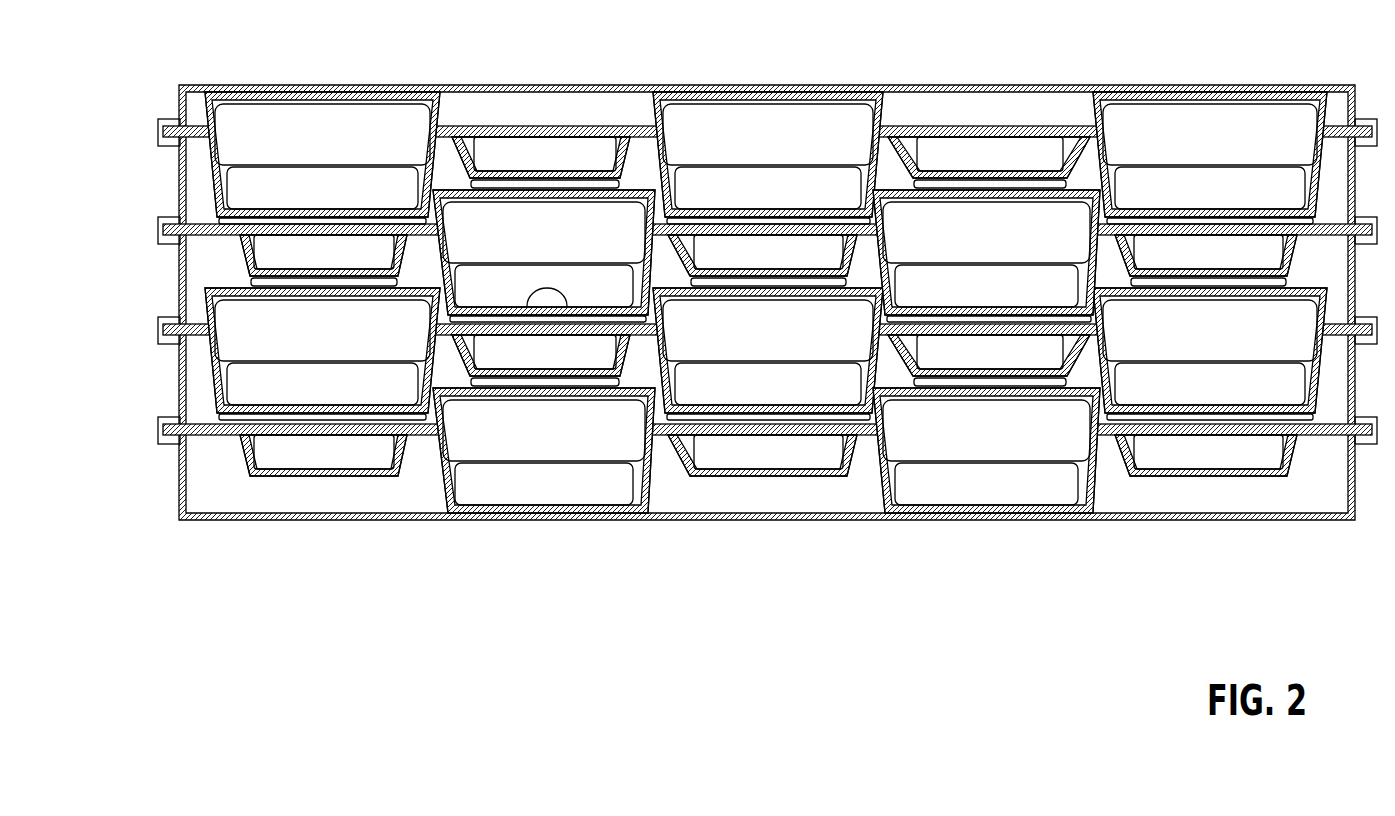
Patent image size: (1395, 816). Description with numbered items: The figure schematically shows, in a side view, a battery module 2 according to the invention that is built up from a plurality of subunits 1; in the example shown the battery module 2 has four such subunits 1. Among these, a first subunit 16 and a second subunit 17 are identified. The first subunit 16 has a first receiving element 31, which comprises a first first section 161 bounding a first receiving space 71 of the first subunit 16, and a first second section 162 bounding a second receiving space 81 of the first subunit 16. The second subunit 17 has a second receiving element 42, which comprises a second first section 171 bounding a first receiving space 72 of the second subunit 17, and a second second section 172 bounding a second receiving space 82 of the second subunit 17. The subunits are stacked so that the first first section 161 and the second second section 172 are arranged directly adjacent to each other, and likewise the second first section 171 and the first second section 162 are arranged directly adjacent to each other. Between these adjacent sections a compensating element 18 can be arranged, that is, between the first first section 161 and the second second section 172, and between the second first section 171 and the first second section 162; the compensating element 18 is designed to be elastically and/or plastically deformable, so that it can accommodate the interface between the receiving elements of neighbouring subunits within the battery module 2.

The subunit 1 is at (718, 342).
The battery module 2 is at (228, 553).
The first subunit 16 is at (170, 268).
The second subunit 17 is at (170, 366).
The compensating element 18 is at (360, 282).
The first receiving element 31 is at (620, 323).
The second receiving element 42 is at (640, 333).
The first receiving space of the first subunit 71 is at (492, 320).
The first receiving space of the second subunit 72 is at (293, 335).
The second receiving space of the first subunit 81 is at (288, 243).
The second receiving space of the second subunit 82 is at (528, 347).
The first first section 161 is at (575, 315).
The first second section 162 is at (383, 284).
The second first section 171 is at (338, 290).
The second second section 172 is at (485, 290).